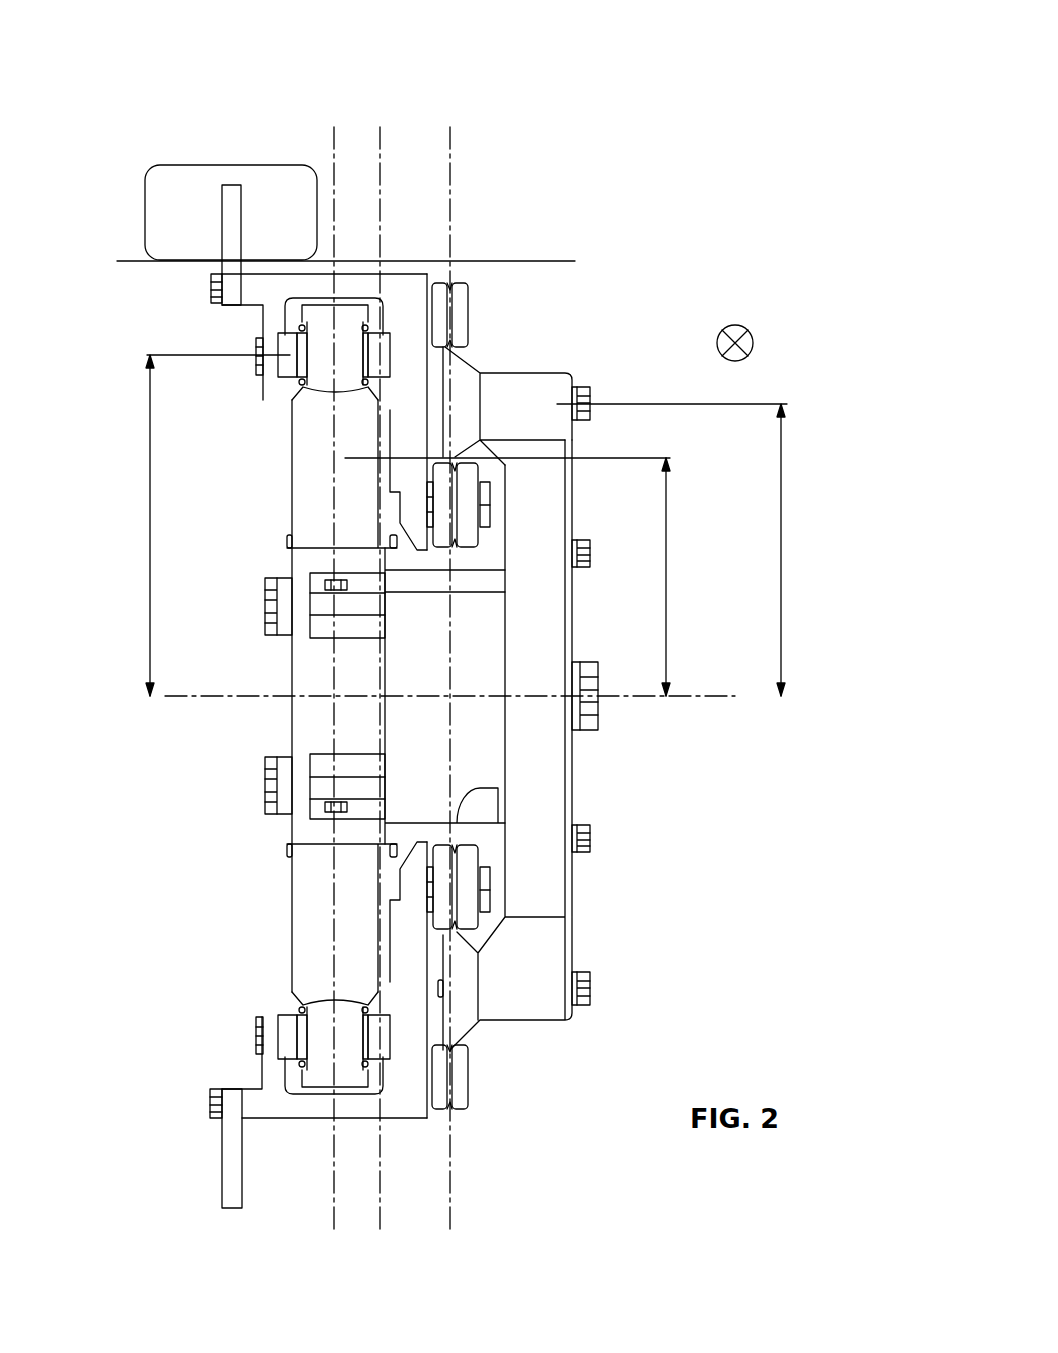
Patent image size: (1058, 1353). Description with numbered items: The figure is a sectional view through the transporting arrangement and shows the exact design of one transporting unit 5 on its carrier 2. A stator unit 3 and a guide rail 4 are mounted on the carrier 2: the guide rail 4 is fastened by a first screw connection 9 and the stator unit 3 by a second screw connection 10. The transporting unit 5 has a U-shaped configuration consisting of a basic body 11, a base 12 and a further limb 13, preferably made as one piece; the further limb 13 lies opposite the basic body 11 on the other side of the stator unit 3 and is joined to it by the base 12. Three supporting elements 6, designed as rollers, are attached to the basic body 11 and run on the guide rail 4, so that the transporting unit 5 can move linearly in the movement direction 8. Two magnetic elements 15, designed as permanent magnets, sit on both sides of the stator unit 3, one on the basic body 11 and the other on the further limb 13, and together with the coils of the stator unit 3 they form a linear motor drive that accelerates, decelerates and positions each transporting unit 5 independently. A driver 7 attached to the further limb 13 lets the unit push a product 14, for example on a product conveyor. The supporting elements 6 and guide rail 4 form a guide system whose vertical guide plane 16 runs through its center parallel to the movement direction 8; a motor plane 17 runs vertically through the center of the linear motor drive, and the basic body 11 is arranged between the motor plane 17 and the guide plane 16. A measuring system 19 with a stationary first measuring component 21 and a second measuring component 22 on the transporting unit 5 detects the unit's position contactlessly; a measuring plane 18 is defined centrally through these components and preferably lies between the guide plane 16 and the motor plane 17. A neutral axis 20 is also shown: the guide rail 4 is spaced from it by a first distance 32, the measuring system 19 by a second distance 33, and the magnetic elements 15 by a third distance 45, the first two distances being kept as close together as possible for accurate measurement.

The carrier 2 is at (540, 778).
The stator unit 3 is at (420, 305).
The guide rail 4 is at (460, 375).
The transporting unit 5 is at (396, 268).
The supporting elements 6 is at (462, 300).
The driver 7 is at (232, 200).
The movement direction 8 is at (735, 325).
The first screw connection 9 is at (590, 400).
The second screw connection 10 is at (320, 590).
The basic body 11 is at (408, 332).
The base 12 is at (350, 285).
The further limb 13 is at (272, 310).
The product 14 is at (178, 195).
The magnetic elements 15 is at (290, 368).
The guide plane 16 is at (452, 190).
The motor plane 17 is at (333, 148).
The measuring plane 18 is at (382, 148).
The measuring system 19 is at (366, 443).
The neutral axis 20 is at (690, 698).
The first measuring component 21 is at (372, 468).
The second measuring component 22 is at (380, 428).
The first distance 32 is at (781, 548).
The second distance 33 is at (666, 576).
The third distance 45 is at (150, 527).